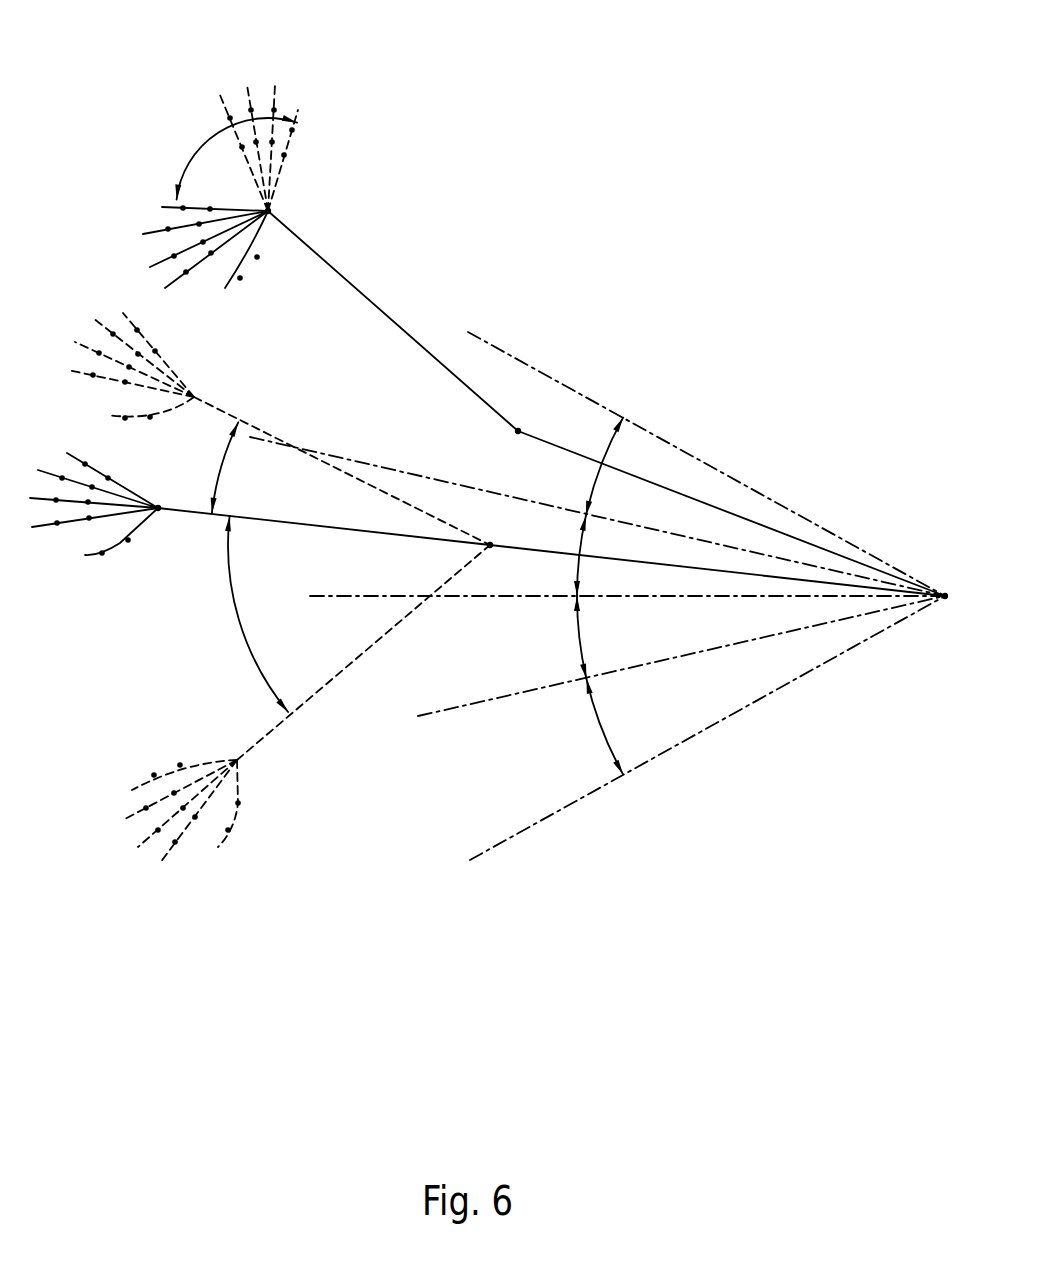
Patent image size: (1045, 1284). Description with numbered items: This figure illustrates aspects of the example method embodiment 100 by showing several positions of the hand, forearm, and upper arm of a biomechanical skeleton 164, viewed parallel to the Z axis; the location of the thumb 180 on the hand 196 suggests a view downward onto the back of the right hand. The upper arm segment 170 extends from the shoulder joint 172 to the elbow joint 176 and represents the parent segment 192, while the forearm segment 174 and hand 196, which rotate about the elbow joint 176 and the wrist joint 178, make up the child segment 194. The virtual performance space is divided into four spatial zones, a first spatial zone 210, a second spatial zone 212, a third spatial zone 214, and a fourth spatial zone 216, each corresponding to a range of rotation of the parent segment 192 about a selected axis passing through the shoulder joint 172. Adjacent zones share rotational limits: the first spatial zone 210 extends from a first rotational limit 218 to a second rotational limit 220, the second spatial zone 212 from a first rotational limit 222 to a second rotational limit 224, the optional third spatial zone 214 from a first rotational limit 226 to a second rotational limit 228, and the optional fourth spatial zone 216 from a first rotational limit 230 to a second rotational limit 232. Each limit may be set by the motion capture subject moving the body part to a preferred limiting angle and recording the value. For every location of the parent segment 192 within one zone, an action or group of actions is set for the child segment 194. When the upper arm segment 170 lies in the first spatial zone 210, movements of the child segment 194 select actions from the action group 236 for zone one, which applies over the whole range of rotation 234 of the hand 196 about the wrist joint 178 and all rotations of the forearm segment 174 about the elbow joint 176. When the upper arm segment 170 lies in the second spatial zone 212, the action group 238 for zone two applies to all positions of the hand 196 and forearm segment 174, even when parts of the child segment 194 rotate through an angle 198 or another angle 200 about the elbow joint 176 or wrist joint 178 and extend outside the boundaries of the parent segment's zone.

The method embodiment 100 is at (667, 75).
The biomechanical skeleton 164 is at (612, 144).
The upper arm segment 170 is at (732, 513).
The shoulder joint 172 is at (945, 590).
The forearm segment 174 is at (365, 296).
The elbow joint 176 is at (518, 433).
The wrist joint 178 is at (272, 211).
The thumb 180 is at (247, 272).
The parent segment 192 is at (633, 432).
The child segment 194 is at (395, 201).
The hand 196 is at (345, 77).
The angle 198 is at (226, 459).
The another angle 200 is at (240, 632).
The first spatial zone 210 is at (592, 486).
The second spatial zone 212 is at (582, 538).
The third spatial zone 214 is at (577, 633).
The fourth spatial zone 216 is at (595, 717).
The first rotational limit 218 is at (580, 387).
The second rotational limit 220 is at (702, 537).
The first rotational limit 222 is at (593, 517).
The second rotational limit 224 is at (485, 592).
The first rotational limit 226 is at (477, 600).
The second rotational limit 228 is at (755, 635).
The first rotational limit 230 is at (698, 653).
The second rotational limit 232 is at (675, 743).
The range of rotation 234 is at (214, 140).
The action group for zone one 236 is at (244, 36).
The action group for zone two 238 is at (50, 309).